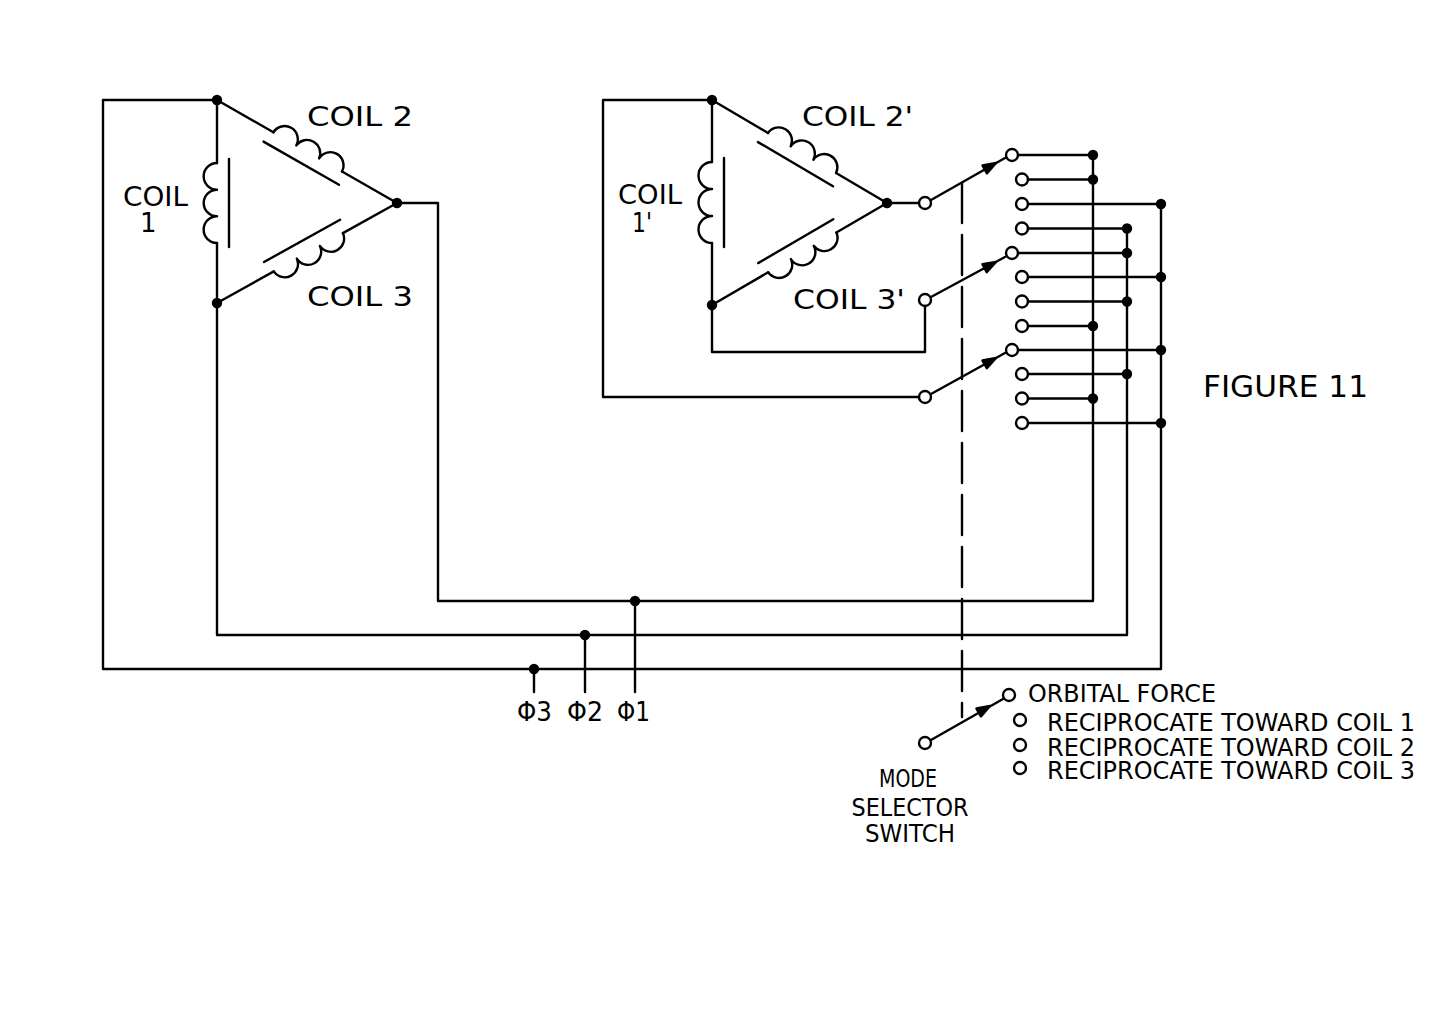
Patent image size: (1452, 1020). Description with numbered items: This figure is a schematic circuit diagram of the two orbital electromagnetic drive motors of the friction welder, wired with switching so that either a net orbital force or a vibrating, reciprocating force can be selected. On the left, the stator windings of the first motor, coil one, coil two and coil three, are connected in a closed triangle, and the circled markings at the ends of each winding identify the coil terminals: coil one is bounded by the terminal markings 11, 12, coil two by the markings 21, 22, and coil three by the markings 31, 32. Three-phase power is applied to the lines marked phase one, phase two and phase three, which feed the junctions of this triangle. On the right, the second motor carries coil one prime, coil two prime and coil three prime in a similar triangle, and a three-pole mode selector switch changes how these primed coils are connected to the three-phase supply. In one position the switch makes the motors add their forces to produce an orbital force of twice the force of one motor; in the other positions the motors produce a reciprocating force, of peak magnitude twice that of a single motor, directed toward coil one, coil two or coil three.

The first terminal of coil 1 11 is at (184, 281).
The second terminal of coil 1 12 is at (184, 132).
The first terminal of coil 2 21 is at (243, 90).
The second terminal of coil 2 22 is at (385, 173).
The first terminal of coil 3 31 is at (386, 236).
The second terminal of coil 3 32 is at (243, 312).